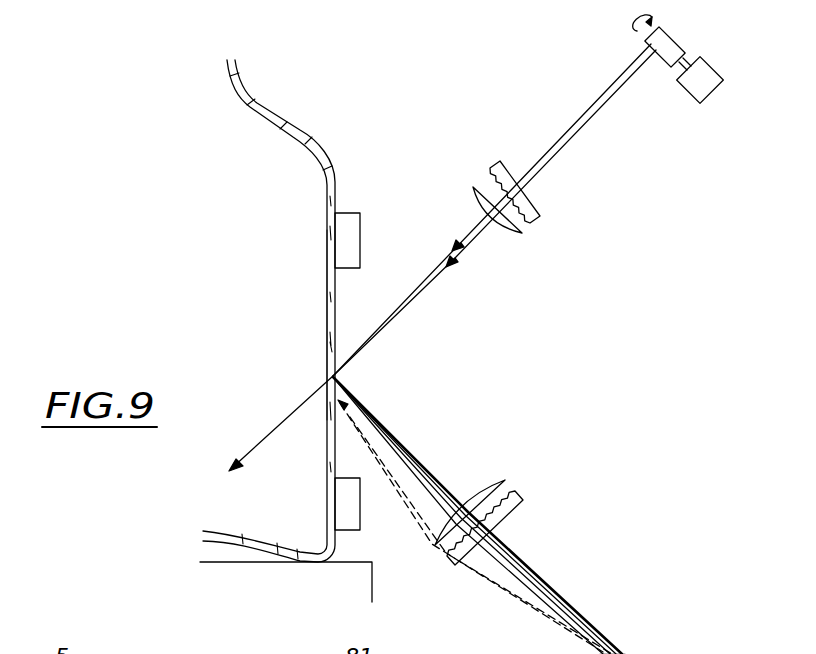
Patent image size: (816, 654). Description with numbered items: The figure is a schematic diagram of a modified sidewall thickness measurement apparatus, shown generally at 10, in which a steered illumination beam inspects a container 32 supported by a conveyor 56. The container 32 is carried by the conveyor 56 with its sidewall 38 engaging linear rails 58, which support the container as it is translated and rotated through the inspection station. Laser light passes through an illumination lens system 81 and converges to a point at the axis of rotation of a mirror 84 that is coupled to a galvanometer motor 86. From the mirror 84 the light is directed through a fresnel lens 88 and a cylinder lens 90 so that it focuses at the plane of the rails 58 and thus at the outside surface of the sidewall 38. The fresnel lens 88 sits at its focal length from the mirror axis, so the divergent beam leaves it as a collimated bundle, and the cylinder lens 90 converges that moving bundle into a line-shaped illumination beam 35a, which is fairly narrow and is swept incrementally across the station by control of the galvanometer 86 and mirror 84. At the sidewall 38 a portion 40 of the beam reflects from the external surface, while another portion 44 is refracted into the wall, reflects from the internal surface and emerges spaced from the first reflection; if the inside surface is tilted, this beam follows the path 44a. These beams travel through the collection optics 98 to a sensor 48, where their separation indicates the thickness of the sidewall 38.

The optical scanning system 10 is at (385, 87).
The container 32 is at (297, 138).
The sidewall 38 is at (327, 284).
The linear rails 58 is at (362, 222).
The mirror 84 is at (648, 40).
The galvanometer motor 86 is at (688, 90).
The illumination lens system 81 is at (492, 154).
The fresnel lens 88 is at (545, 216).
The cylinder lens 90 is at (522, 236).
The illumination beam 35a is at (356, 363).
The reflected portion of illumination beam 40 is at (353, 392).
The reflected light beam portion 44 is at (367, 422).
The reflected light beam path 44a is at (520, 596).
The collection optics assembly 98 is at (553, 467).
The sensor 48 is at (640, 653).
The conveyor 56 is at (147, 653).